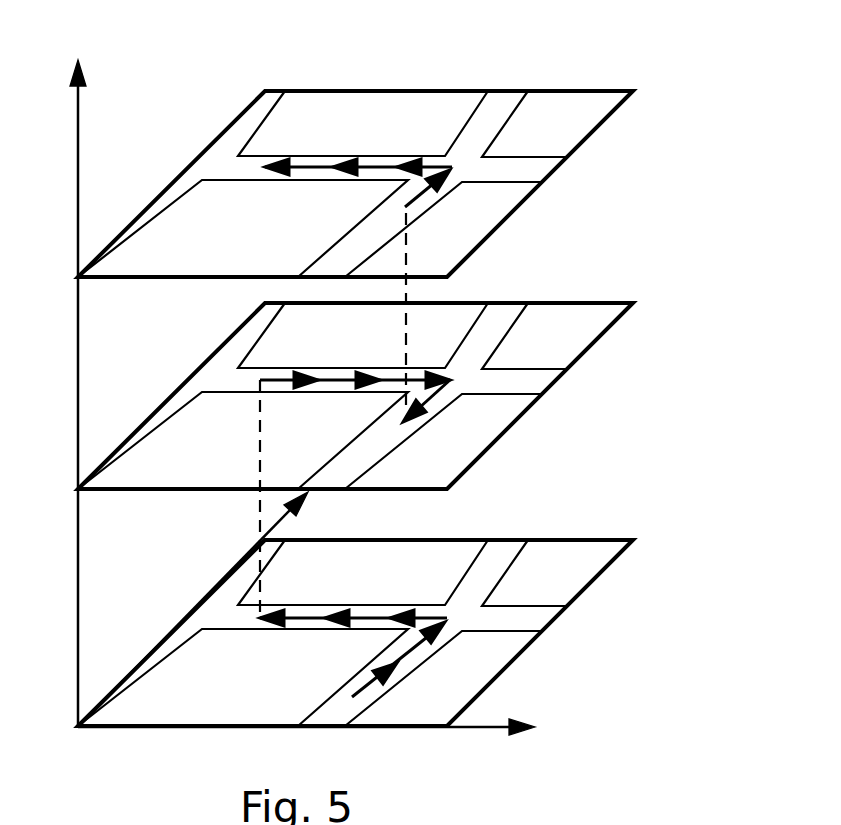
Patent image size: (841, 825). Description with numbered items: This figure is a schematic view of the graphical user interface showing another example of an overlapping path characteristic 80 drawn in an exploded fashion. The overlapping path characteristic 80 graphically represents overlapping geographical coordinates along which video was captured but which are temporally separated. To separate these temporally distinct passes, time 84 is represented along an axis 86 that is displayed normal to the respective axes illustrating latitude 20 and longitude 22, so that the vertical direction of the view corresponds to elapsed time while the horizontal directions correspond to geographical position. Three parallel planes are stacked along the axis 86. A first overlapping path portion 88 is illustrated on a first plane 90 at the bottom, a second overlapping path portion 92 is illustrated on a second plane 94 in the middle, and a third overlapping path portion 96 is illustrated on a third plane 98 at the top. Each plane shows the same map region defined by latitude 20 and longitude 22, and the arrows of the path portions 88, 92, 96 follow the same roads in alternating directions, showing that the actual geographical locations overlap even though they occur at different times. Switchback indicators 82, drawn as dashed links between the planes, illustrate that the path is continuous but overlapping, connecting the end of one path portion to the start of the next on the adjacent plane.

The overlapping path characteristic 80 is at (662, 29).
The time 84 is at (48, 62).
The axis 86 is at (78, 327).
The latitude 20 is at (576, 748).
The longitude 22 is at (393, 510).
The third plane 98 is at (580, 91).
The second plane 94 is at (572, 303).
The first plane 90 is at (590, 540).
The third overlapping path portion 96 is at (320, 168).
The second overlapping path portion 92 is at (352, 383).
The first overlapping path portion 88 is at (313, 621).
The switchback indicators 82 is at (407, 243).